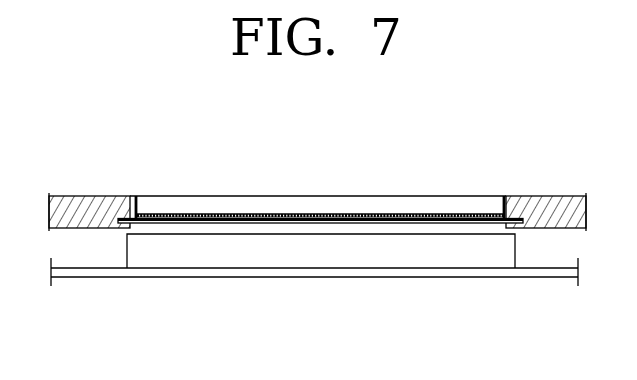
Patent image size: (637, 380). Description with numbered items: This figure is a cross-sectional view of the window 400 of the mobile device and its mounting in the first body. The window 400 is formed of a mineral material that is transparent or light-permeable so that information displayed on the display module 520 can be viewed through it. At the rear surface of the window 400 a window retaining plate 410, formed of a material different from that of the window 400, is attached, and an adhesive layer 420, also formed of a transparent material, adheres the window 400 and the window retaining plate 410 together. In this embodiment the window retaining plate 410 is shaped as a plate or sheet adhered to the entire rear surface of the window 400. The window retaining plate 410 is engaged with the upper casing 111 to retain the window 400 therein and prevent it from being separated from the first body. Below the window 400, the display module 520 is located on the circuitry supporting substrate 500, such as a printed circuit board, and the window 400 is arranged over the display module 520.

The upper casing 111 is at (75, 196).
The window 400 is at (262, 203).
The window retaining plate 410 is at (128, 196).
The adhesive layer 420 is at (184, 214).
The circuitry supporting substrate 500 is at (126, 268).
The display module 520 is at (238, 258).